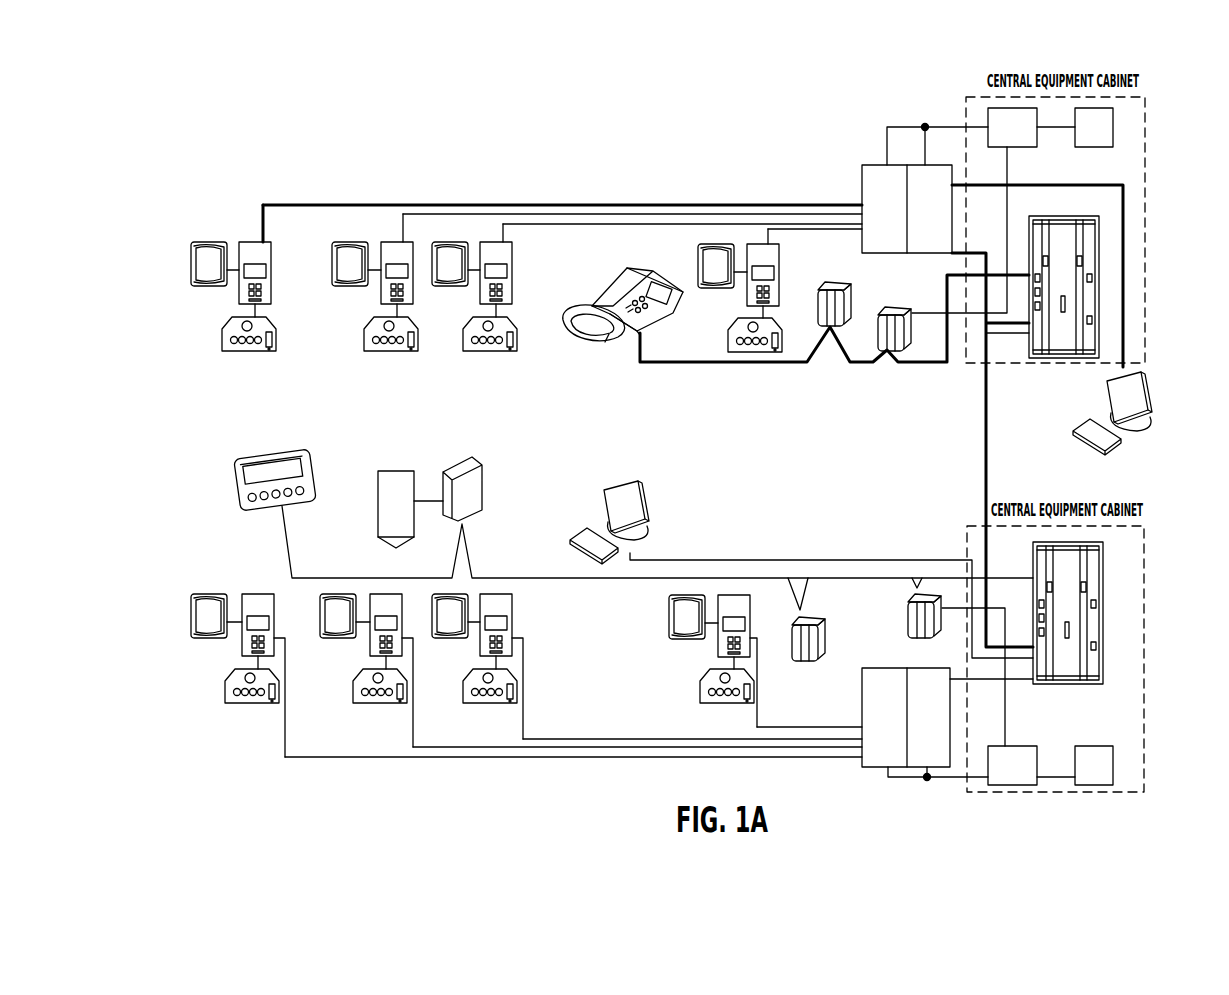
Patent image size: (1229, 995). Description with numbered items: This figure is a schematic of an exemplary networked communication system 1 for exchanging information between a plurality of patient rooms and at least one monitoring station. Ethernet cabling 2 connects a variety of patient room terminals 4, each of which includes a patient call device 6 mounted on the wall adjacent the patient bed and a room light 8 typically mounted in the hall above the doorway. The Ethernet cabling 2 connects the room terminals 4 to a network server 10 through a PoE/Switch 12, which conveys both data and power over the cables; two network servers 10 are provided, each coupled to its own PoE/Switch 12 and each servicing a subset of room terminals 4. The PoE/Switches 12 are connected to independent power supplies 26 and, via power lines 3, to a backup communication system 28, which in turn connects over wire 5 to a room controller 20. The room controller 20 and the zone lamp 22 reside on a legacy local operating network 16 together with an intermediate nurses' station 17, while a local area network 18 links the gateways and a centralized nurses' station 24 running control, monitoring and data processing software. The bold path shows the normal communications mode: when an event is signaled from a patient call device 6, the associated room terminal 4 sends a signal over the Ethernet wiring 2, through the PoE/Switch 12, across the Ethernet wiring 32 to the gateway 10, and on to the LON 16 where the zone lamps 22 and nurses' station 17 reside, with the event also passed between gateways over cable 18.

The networked communication system 1 is at (268, 104).
The Ethernet cabling 2 is at (548, 224).
The power lines 3 is at (910, 121).
The patient room terminal 4 is at (272, 281).
The signal wire 5 is at (1012, 173).
The patient call device 6 is at (226, 350).
The room light 8 is at (191, 248).
The network server 10 is at (1108, 285).
The PoE/Switch 12 is at (877, 163).
The local operating network (LON) 16 is at (715, 363).
The intermediate nurses' station 17 is at (612, 348).
The local area network (LAN) 18 is at (1130, 216).
The room controller 20 is at (886, 354).
The zone lamp 22 is at (808, 300).
The centralized nurses' station 24 is at (1158, 398).
The power supply 26 is at (1126, 112).
The backup communication system (BCS) 28 is at (984, 96).
The Ethernet wiring 32 is at (982, 326).